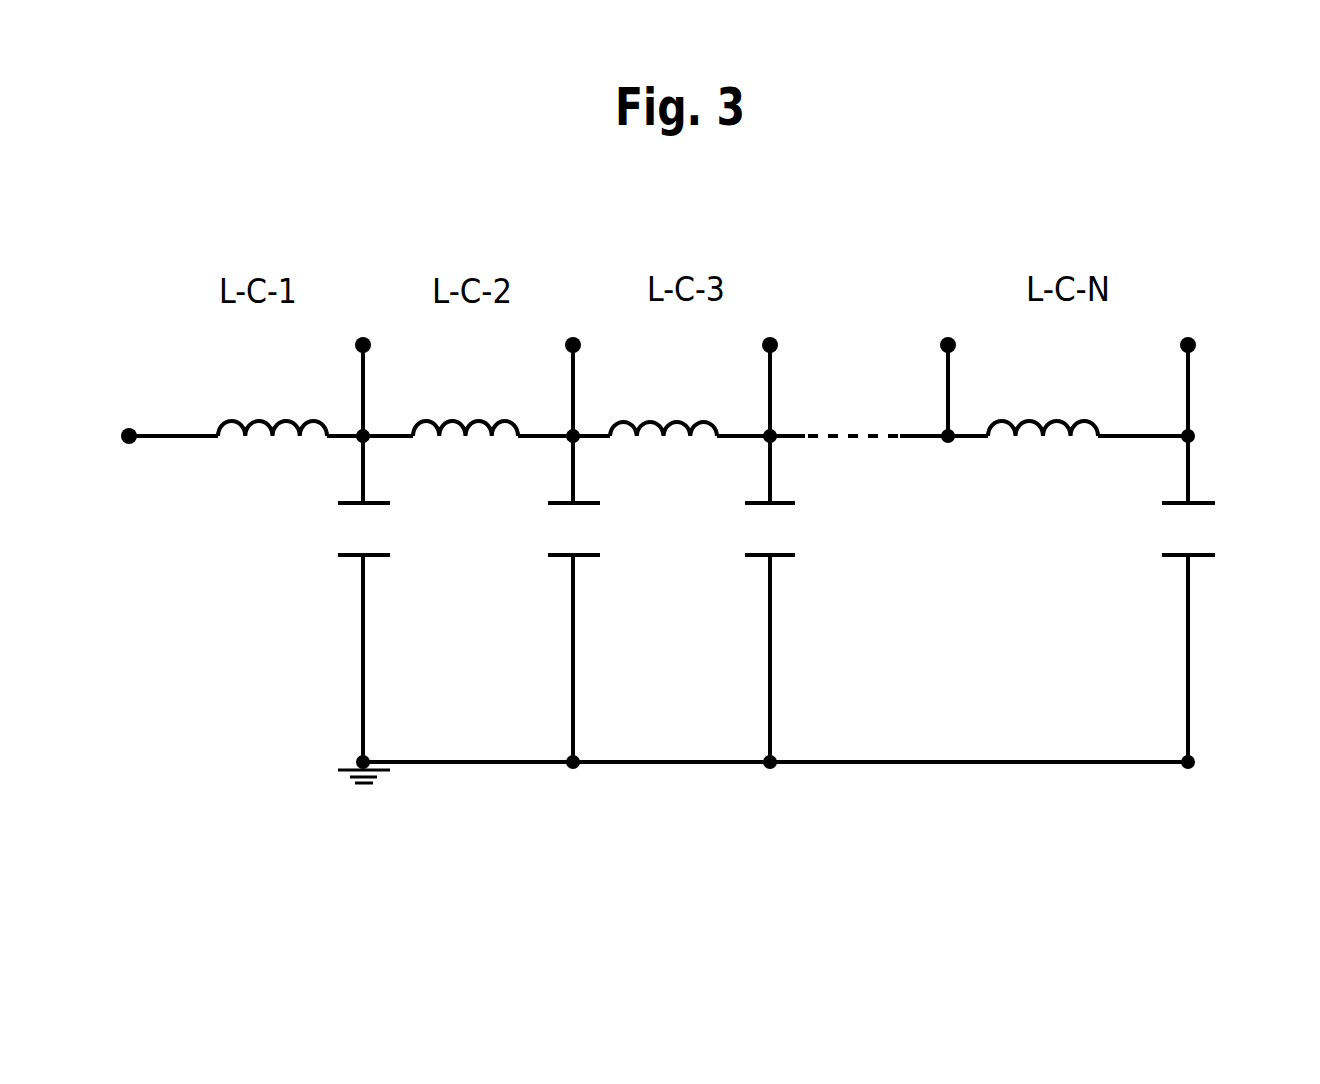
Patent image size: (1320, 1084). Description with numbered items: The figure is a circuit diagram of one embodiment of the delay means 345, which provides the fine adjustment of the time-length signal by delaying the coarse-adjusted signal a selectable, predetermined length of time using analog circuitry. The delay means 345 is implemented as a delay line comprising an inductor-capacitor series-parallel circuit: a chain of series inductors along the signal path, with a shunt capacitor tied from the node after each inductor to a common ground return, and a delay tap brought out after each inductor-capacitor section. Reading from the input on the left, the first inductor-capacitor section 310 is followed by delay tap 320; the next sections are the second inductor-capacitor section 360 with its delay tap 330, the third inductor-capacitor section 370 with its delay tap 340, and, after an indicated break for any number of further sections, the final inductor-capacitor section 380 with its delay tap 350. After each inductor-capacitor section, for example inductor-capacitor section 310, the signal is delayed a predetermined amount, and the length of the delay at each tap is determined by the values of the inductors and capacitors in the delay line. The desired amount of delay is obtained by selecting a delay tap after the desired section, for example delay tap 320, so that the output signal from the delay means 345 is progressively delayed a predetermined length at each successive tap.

The inductor-capacitor section 1 310 is at (168, 775).
The delay tap 320 is at (405, 379).
The second tap node 330 is at (612, 379).
The third tap node 340 is at (809, 378).
The delay means 345 is at (1237, 822).
The Nth tap node 350 is at (1229, 378).
The second L-C filter section 360 is at (425, 772).
The third L-C filter section 370 is at (610, 772).
The Nth L-C filter section 380 is at (915, 772).